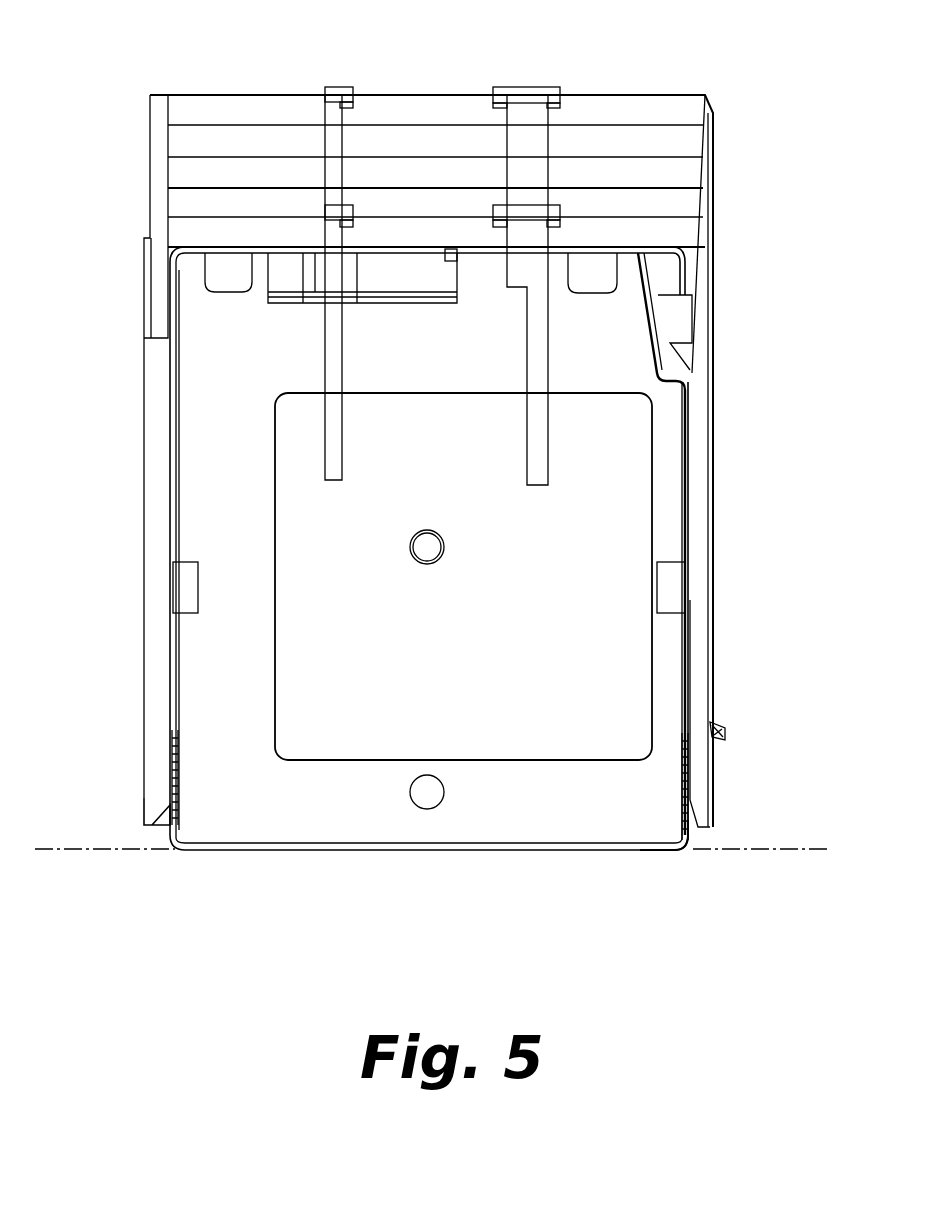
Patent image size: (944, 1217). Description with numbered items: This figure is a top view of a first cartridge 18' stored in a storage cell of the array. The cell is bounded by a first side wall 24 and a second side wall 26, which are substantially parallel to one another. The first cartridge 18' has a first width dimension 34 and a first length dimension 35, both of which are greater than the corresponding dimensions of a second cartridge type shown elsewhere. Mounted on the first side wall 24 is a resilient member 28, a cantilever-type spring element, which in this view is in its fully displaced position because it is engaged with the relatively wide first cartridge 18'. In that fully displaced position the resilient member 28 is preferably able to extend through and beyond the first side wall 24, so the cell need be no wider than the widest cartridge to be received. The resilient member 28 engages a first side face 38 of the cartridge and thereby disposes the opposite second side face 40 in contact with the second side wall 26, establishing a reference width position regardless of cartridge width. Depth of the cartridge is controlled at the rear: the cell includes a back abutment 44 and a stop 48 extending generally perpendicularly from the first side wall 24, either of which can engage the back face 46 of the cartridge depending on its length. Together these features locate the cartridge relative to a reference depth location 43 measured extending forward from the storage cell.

The first cartridge 18' is at (555, 601).
The first side wall 24 is at (690, 787).
The second side wall 26 is at (176, 684).
The resilient member 28 is at (723, 727).
The first width dimension 34 is at (678, 816).
The first length dimension 35 is at (201, 262).
The first side face 38 is at (690, 837).
The second side face 40 is at (153, 823).
The reference depth location 43 is at (800, 849).
The back abutment 44 is at (687, 273).
The back face 46 is at (463, 247).
The stop 48 is at (670, 340).